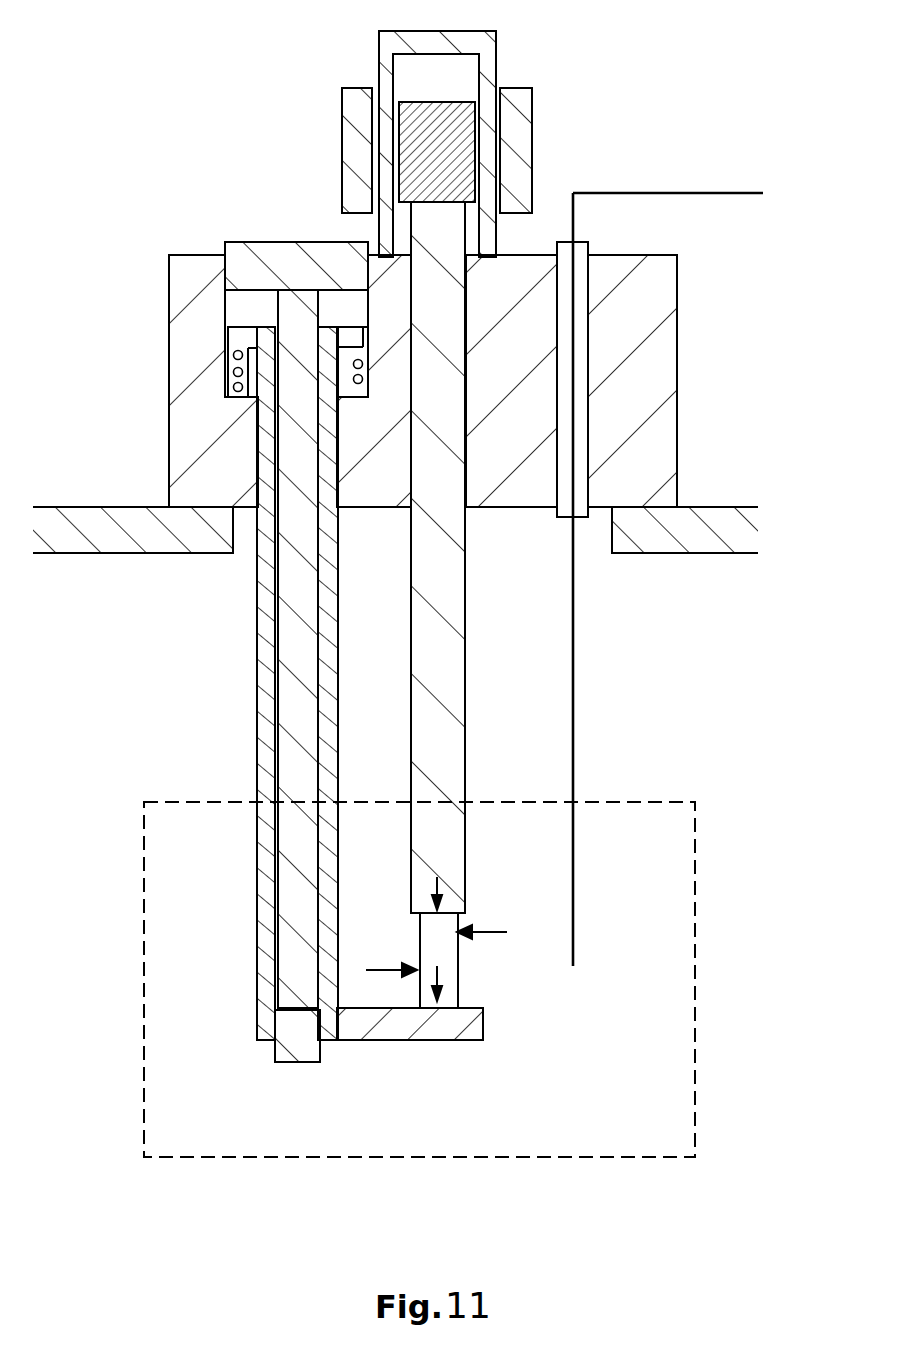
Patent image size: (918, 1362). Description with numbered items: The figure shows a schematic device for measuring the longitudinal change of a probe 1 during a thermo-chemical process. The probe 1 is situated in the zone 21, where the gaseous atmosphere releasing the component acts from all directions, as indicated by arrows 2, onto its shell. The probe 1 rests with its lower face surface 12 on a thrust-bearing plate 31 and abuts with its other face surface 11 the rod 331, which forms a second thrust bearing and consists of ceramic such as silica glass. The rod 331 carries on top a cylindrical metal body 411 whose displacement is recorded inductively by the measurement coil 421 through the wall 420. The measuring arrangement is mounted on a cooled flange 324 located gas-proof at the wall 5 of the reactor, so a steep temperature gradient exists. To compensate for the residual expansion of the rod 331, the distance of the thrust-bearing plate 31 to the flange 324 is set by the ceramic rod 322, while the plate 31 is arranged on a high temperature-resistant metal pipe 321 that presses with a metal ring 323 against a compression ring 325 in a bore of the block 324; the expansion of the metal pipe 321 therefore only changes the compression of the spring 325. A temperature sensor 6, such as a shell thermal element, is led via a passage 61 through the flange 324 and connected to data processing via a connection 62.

The probe 1 is at (448, 946).
The arrows 2 is at (381, 964).
The wall 5 is at (58, 497).
The temperature sensor 6 is at (574, 941).
The face surface 11 is at (437, 877).
The face surface 12 is at (437, 966).
The zone 21 is at (697, 1087).
The thrust-bearing plate 31 is at (399, 1029).
The passage 61 is at (592, 248).
The connection 62 is at (690, 190).
The metal pipe 321 is at (265, 652).
The ceramic rod 322 is at (300, 738).
The metal ring 323 is at (242, 340).
The flange 324 is at (177, 417).
The compression ring 325 is at (252, 263).
The rod 331 is at (448, 710).
The metal body 411 is at (445, 128).
The wall 420 is at (482, 50).
The inductive measurement coil 421 is at (533, 155).